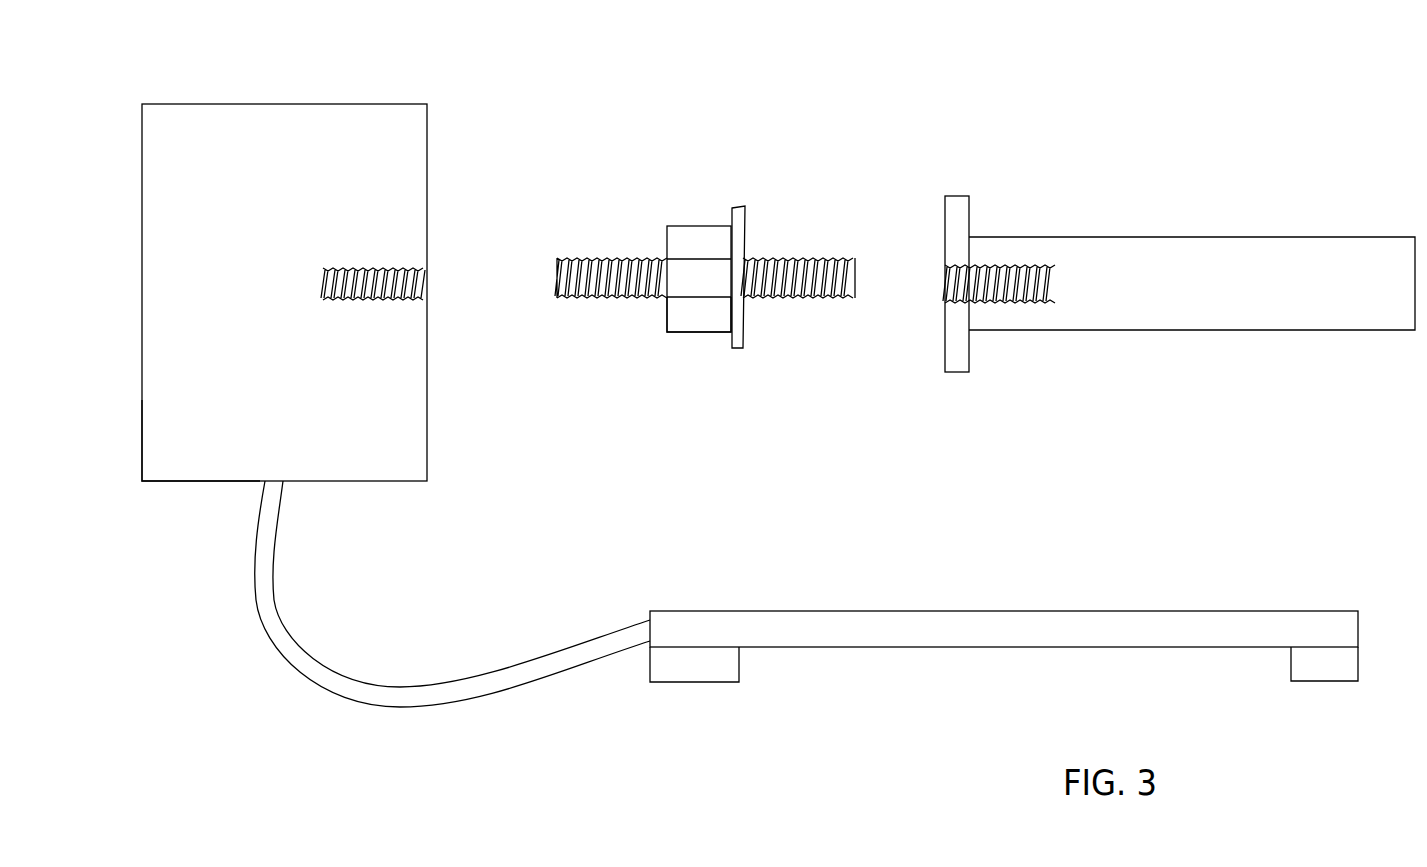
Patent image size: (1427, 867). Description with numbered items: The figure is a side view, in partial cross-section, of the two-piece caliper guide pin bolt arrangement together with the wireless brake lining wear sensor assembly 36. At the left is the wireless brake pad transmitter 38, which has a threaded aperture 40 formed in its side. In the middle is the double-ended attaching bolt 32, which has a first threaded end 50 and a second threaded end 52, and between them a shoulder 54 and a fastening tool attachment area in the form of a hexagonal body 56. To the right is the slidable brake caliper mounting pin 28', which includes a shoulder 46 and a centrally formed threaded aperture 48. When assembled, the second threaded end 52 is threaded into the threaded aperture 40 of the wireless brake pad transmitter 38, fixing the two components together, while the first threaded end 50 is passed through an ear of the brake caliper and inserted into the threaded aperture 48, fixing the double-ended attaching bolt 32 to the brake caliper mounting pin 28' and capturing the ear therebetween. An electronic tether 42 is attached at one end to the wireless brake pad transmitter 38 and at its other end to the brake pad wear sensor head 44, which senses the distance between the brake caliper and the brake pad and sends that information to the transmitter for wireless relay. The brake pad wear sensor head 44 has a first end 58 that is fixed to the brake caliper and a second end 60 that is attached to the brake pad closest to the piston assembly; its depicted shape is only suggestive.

The slidable brake caliper mounting pin 28' is at (1192, 246).
The double-ended attaching bolt 32 is at (703, 234).
The wireless brake lining wear sensor assembly 36 is at (292, 137).
The wireless brake pad transmitter 38 is at (200, 467).
The threaded aperture 40 is at (415, 270).
The electronic tether 42 is at (266, 594).
The brake pad wear sensor head 44 is at (845, 615).
The shoulder 46 is at (961, 365).
The threaded aperture 48 is at (957, 287).
The first threaded end 50 is at (803, 258).
The second threaded end 52 is at (608, 258).
The shoulder 54 is at (740, 348).
The hexagonal body 56 is at (707, 321).
The first end 58 is at (705, 667).
The second end 60 is at (1322, 676).